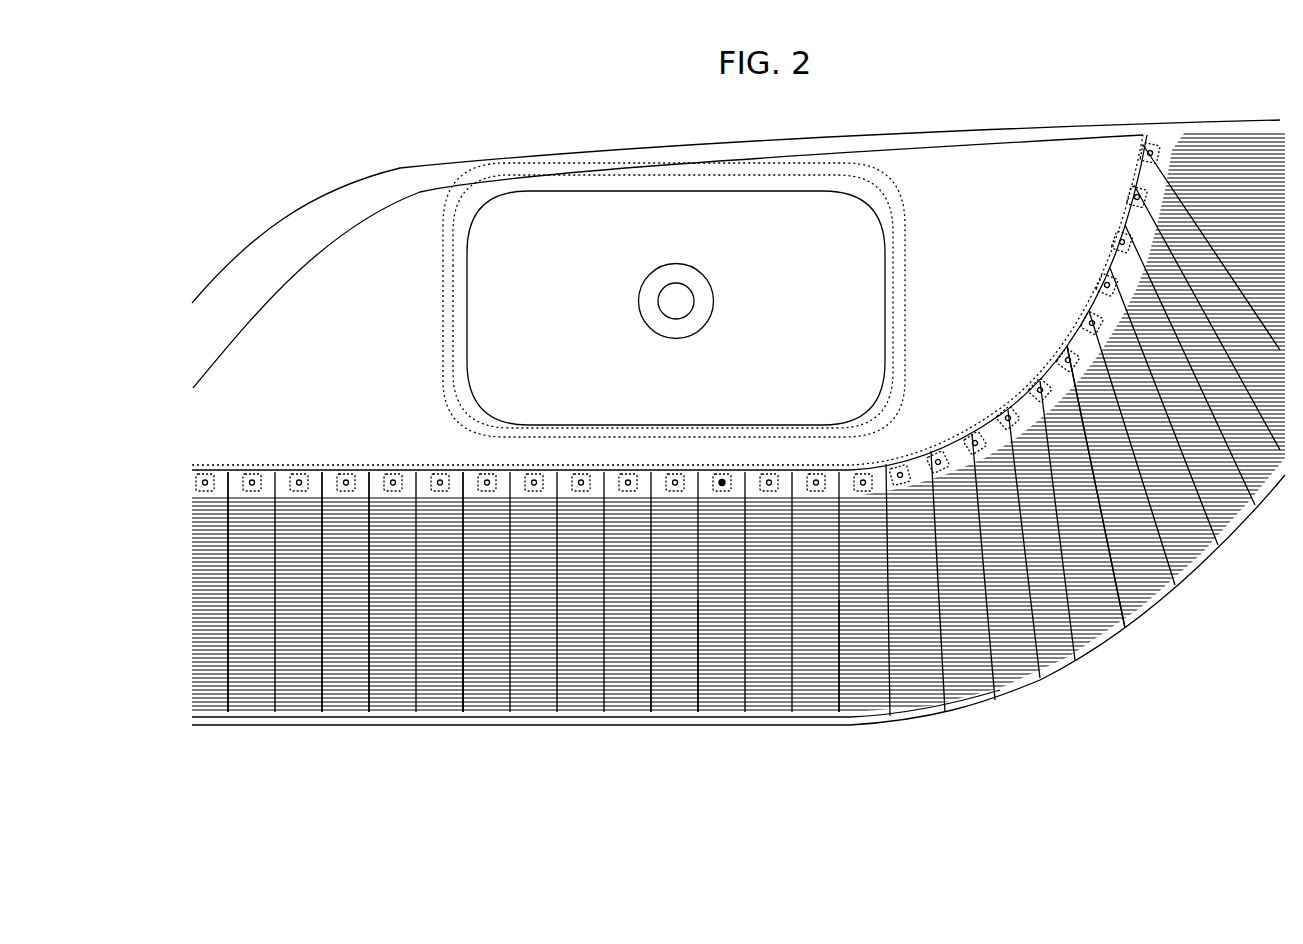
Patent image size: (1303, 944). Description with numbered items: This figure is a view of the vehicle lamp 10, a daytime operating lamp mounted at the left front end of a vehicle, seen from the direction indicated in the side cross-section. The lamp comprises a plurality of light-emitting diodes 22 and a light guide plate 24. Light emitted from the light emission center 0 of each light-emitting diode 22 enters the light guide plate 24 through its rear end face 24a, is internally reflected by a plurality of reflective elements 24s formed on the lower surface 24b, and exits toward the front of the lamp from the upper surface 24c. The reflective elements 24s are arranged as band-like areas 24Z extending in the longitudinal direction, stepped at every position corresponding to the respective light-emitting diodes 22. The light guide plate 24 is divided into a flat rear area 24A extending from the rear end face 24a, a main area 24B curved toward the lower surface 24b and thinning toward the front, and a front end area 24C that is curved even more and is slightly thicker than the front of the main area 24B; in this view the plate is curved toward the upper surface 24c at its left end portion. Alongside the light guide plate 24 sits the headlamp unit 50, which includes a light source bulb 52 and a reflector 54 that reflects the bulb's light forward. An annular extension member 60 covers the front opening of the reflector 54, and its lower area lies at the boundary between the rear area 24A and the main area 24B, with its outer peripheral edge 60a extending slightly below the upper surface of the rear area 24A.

The vehicle lamp 10 is at (1117, 708).
The light-emitting diodes 22 is at (889, 462).
The light guide plate 24 is at (987, 703).
The rear area 24A is at (473, 467).
The rear end face 24a is at (380, 470).
The lower surface 24b is at (232, 470).
The upper surface 24c is at (327, 468).
The main area 24B is at (482, 628).
The front end area 24C is at (482, 703).
The band-like areas 24Z is at (708, 718).
The reflective elements 24s is at (850, 730).
The headlamp unit 50 is at (880, 178).
The light source bulb 52 is at (683, 292).
The reflector 54 is at (907, 240).
The extension member 60 is at (377, 170).
The outer peripheral edge 60a is at (578, 478).
The light emission center 0 is at (722, 480).